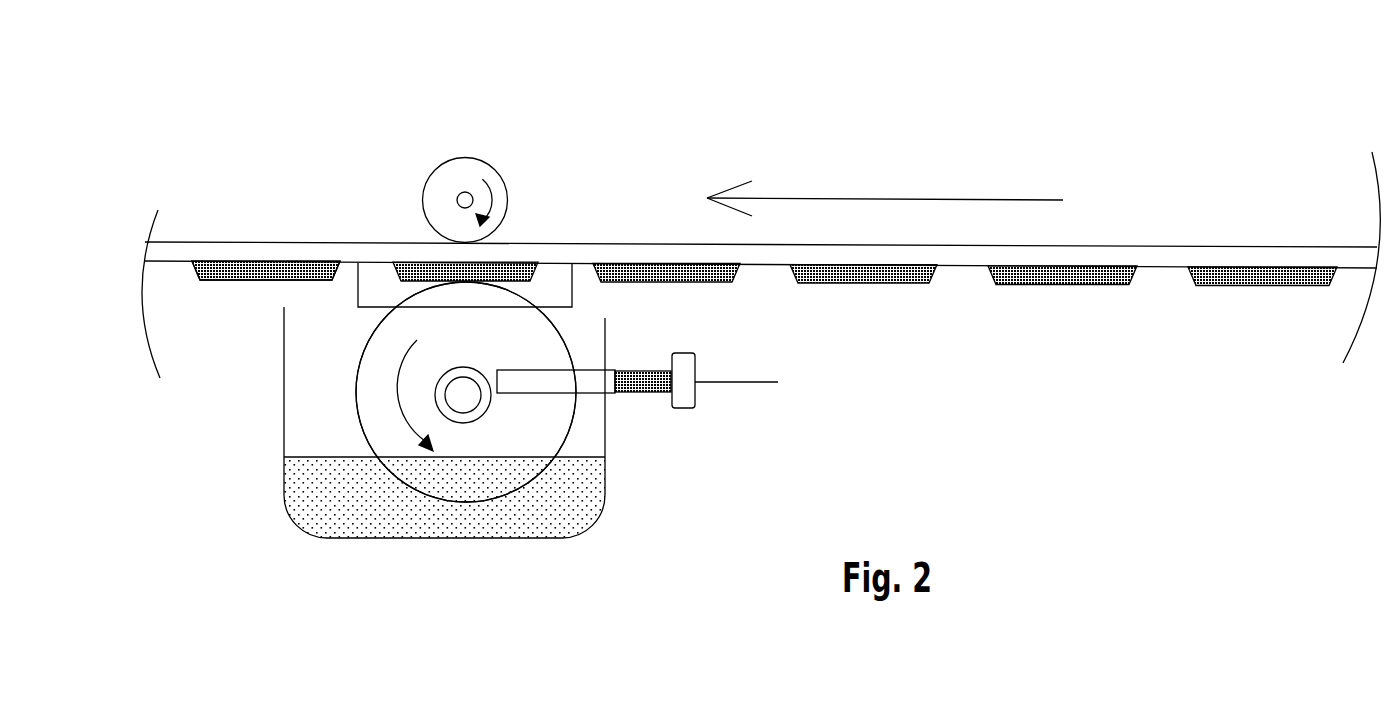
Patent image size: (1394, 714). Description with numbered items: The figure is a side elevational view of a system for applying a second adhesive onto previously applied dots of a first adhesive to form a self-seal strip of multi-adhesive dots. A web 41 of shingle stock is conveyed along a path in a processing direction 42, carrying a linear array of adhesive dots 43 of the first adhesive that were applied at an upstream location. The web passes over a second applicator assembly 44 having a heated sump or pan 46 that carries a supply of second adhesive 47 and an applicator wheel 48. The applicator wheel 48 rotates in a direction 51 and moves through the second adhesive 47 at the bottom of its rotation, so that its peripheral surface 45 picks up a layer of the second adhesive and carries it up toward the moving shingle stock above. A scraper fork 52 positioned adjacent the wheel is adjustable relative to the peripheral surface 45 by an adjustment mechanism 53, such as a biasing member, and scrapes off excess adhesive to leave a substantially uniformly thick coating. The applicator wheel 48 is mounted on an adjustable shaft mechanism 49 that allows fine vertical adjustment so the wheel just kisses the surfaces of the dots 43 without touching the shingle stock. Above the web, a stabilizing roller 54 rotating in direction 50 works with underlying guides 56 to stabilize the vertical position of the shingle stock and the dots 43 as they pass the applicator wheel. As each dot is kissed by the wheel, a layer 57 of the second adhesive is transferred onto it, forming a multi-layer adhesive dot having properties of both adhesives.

The web 41 is at (1128, 258).
The processing direction 42 is at (833, 197).
The adhesive dots 43 is at (860, 283).
The second applicator assembly 44 is at (258, 527).
The peripheral surface 45 is at (354, 400).
The heated sump or pan 46 is at (608, 422).
The second adhesive 47 is at (380, 520).
The applicator wheel 48 is at (367, 383).
The adjustable shaft mechanism 49 is at (485, 413).
The direction 50 is at (493, 185).
The direction 51 is at (398, 412).
The scraper fork 52 is at (548, 377).
The adjustment mechanism 53 is at (687, 398).
The stabilizing roller 54 is at (470, 172).
The guides 56 is at (375, 283).
The layer 57 is at (242, 288).